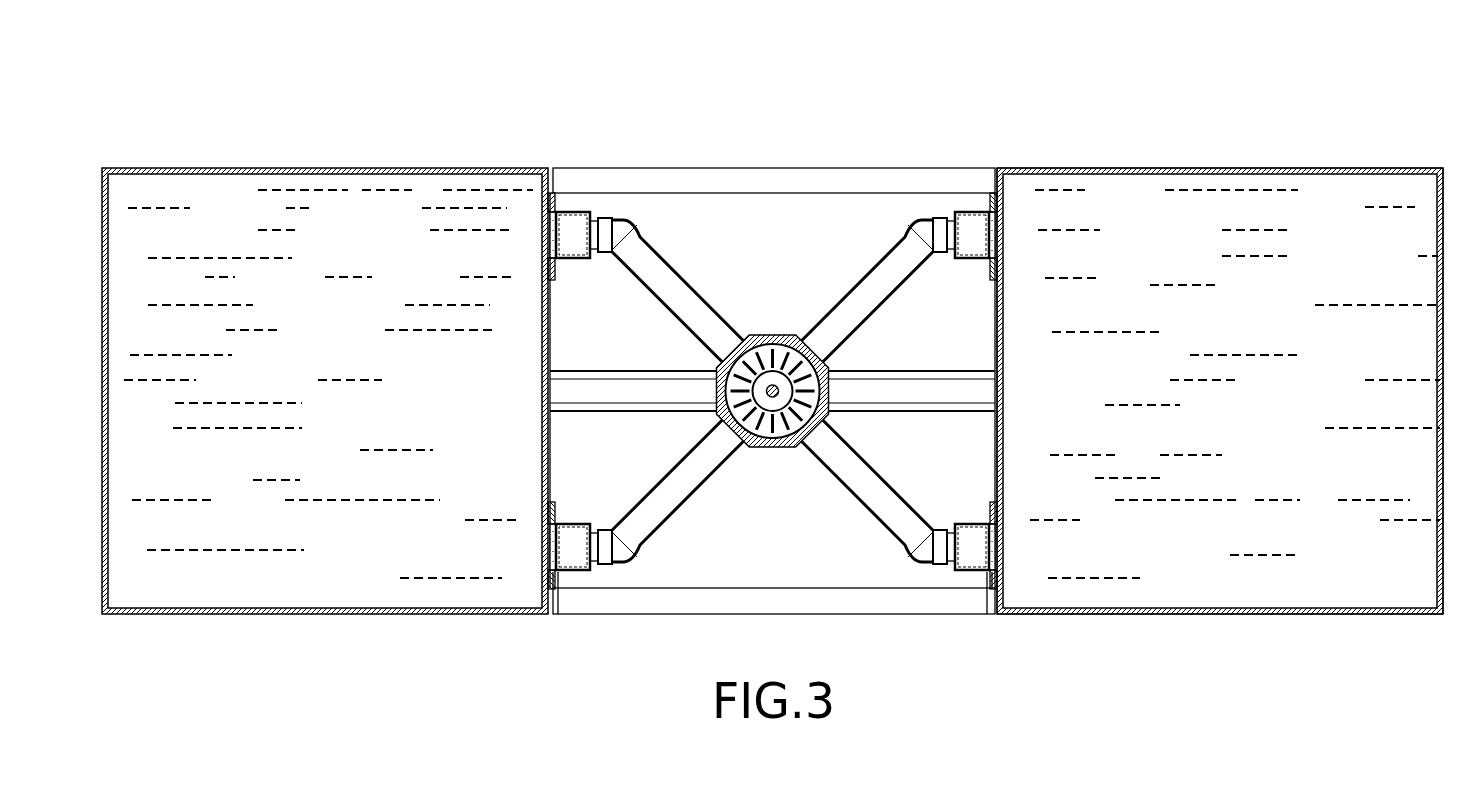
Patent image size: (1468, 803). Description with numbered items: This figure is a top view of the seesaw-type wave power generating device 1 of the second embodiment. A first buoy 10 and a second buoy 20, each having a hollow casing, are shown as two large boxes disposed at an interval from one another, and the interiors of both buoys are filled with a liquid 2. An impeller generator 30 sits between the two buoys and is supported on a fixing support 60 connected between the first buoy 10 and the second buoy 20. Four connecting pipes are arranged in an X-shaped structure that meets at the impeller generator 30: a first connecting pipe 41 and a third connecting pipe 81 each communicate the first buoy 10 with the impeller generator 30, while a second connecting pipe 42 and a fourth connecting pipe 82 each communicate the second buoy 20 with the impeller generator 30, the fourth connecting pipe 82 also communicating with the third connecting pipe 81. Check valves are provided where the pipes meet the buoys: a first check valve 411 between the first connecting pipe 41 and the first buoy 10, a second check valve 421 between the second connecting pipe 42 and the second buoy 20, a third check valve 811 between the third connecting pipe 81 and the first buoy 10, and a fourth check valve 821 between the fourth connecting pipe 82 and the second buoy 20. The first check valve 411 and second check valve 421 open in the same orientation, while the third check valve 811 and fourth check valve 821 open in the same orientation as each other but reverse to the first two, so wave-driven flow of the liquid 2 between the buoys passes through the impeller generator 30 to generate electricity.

The seesaw-type wave power generating device 1 is at (775, 96).
The liquid 2 is at (1232, 197).
The first buoy 10 is at (243, 170).
The second buoy 20 is at (1305, 168).
The impeller generator 30 is at (775, 324).
The first connecting pipe 41 is at (693, 493).
The second connecting pipe 42 is at (856, 286).
The fixing support 60 is at (903, 392).
The third connecting pipe 81 is at (697, 292).
The fourth connecting pipe 82 is at (852, 493).
The first check valve 411 is at (555, 548).
The second check valve 421 is at (987, 232).
The third check valve 811 is at (572, 213).
The fourth check valve 821 is at (991, 548).